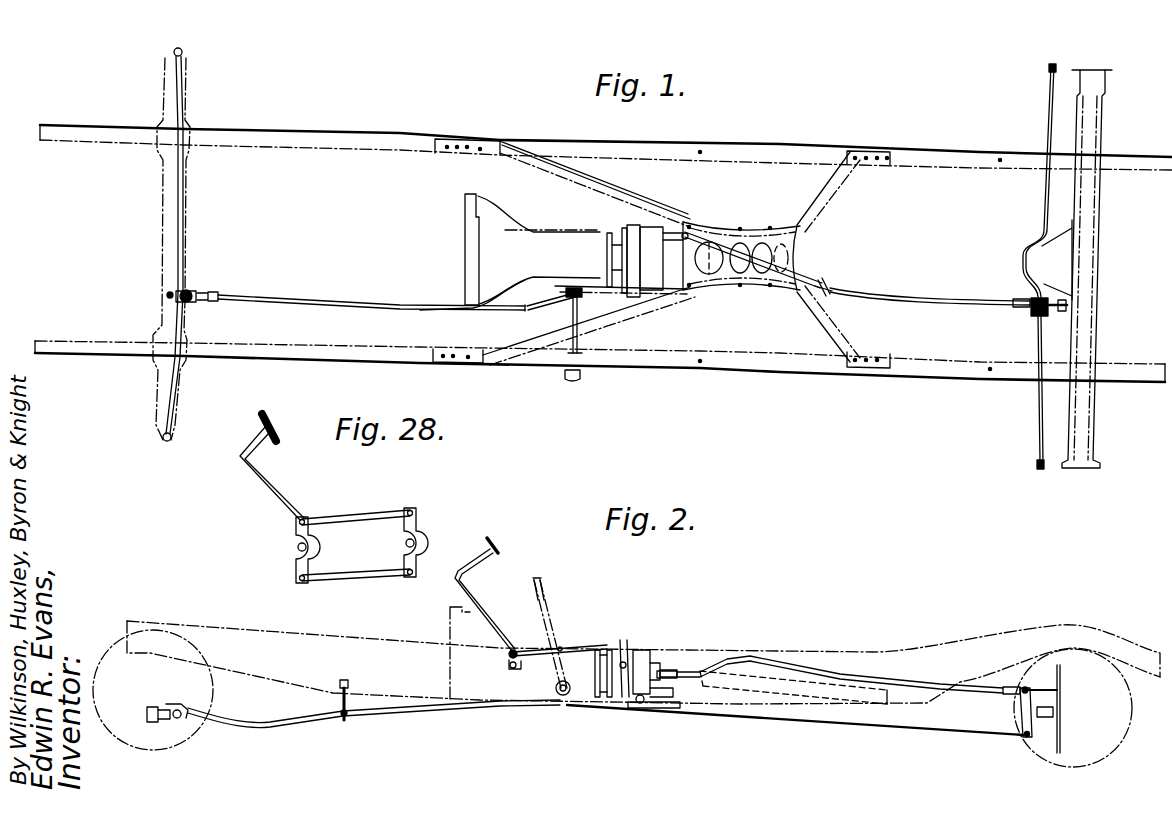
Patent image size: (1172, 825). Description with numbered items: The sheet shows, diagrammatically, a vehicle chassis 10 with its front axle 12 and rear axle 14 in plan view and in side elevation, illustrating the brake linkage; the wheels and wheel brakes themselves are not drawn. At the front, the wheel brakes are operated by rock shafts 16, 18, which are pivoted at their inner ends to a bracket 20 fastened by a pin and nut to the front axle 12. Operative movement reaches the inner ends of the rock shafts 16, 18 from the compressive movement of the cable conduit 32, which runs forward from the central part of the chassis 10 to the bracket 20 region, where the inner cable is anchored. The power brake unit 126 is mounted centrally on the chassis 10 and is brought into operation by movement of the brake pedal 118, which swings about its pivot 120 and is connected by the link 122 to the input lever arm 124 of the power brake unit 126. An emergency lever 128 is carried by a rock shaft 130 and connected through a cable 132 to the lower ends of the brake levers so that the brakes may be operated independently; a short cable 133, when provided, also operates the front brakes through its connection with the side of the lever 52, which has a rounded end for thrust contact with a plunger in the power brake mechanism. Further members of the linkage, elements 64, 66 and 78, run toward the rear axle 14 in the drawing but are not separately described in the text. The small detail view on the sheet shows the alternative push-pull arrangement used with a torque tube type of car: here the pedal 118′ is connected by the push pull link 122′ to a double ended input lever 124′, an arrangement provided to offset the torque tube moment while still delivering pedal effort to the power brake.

In FIG. 1, the chassis 10 is at (720, 370).
In FIG. 1, the front axle 12 is at (165, 229).
In FIG. 1, the rear axle 14 is at (1094, 287).
In FIG. 1, the rock shaft 16 is at (181, 326).
In FIG. 1, the rock shaft 18 is at (186, 235).
In FIG. 2, the bracket 20 is at (168, 725).
In FIG. 1, the cable conduit 32 is at (328, 300).
In FIG. 2, the cable conduit 32 is at (393, 716).
In FIG. 2, the lever 52 is at (1033, 725).
In FIG. 1, the rear brake rod 64 is at (1038, 338).
In FIG. 1, the rear brake rod 66 is at (1043, 195).
In FIG. 1, the brake pull rod 78 is at (930, 291).
In FIG. 2, the brake pull rod 78 is at (877, 673).
In FIG. 2, the brake pedal 118 is at (469, 600).
In FIG. 28, the pedal 118′ is at (263, 487).
In FIG. 2, the pivot 120 is at (512, 670).
In FIG. 2, the link 122 is at (571, 644).
In FIG. 28, the push pull link 122′ is at (363, 518).
In FIG. 2, the input lever arm 124 is at (634, 646).
In FIG. 28, the double ended input lever 124′ is at (418, 523).
In FIG. 1, the power brake unit 126 is at (655, 236).
In FIG. 2, the power brake unit 126 is at (652, 653).
In FIG. 2, the emergency lever 128 is at (542, 580).
In FIG. 1, the rock shaft 130 is at (580, 340).
In FIG. 1, the cable 132 is at (838, 290).
In FIG. 2, the cable 132 is at (764, 719).
In FIG. 2, the short cable 133 is at (640, 705).